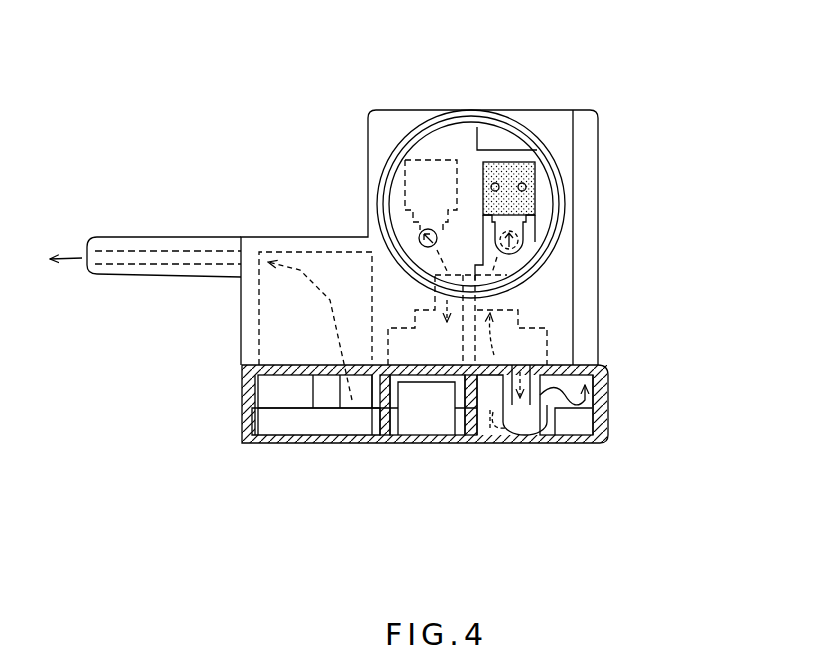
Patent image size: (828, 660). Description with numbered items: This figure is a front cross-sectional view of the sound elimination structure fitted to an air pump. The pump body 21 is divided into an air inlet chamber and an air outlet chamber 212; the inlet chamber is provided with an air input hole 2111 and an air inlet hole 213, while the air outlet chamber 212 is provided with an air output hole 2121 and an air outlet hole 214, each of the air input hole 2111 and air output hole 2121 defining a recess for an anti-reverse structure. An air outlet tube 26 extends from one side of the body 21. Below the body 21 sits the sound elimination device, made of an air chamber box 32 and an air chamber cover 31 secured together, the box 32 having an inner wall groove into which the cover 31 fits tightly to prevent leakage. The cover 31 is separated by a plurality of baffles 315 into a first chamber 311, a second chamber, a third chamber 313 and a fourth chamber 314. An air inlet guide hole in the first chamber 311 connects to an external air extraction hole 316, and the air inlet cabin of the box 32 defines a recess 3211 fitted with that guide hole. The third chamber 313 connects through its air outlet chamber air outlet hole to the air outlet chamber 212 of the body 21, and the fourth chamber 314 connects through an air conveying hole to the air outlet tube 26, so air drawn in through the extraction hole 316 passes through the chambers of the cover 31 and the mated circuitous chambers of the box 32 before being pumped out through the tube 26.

The body 21 is at (248, 326).
The air outlet tube 26 is at (113, 245).
The air outlet chamber 212 is at (458, 165).
The air output hole 2121 is at (428, 238).
The air input hole 2111 is at (437, 247).
The air inlet hole 213 is at (330, 292).
The air outlet hole 214 is at (330, 292).
The air chamber cover 31 is at (608, 392).
The air chamber box 32 is at (587, 438).
The first chamber 311 is at (500, 418).
The recess 3211 is at (527, 425).
The third chamber 313 is at (437, 408).
The fourth chamber 314 is at (325, 415).
The baffles 315 is at (373, 412).
The external air extraction hole 316 is at (585, 378).